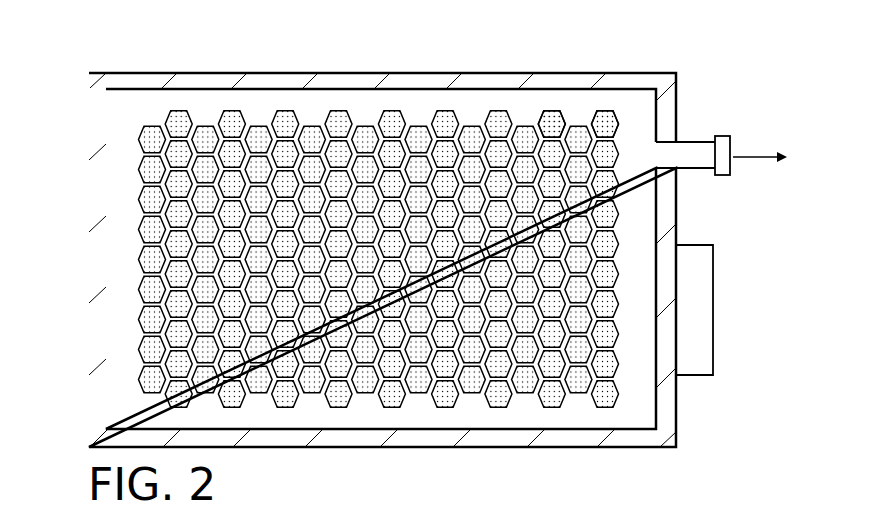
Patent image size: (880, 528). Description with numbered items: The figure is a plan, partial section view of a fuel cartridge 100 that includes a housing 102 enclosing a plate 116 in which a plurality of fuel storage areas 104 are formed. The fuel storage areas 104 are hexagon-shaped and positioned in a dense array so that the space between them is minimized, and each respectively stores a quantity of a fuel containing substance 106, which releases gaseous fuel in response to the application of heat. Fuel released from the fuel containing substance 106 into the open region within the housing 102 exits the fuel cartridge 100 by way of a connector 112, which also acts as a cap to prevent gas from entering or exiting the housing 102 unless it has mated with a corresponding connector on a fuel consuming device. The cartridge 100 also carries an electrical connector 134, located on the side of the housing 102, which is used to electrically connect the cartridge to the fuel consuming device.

The fuel cartridge 100 is at (291, 58).
The housing 102 is at (413, 73).
The fuel storage areas 104 is at (606, 112).
The fuel containing substance 106 is at (561, 118).
The connector 112 is at (724, 136).
The plate 116 is at (130, 412).
The electrical connector 134 is at (708, 245).